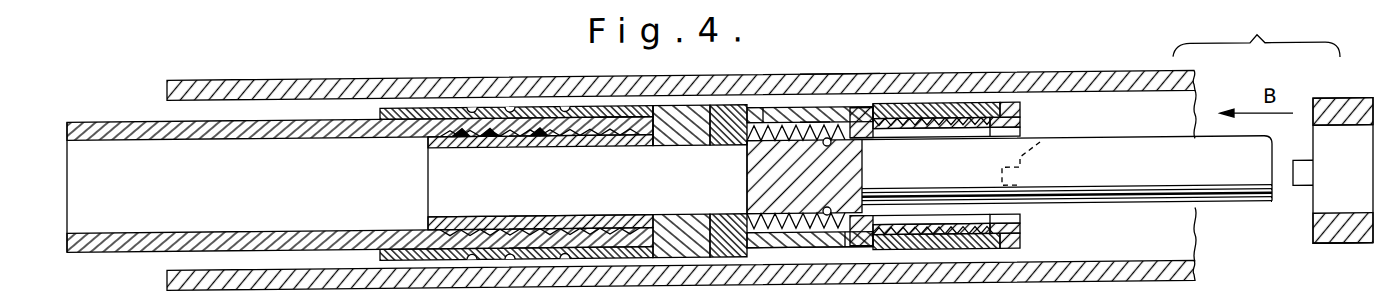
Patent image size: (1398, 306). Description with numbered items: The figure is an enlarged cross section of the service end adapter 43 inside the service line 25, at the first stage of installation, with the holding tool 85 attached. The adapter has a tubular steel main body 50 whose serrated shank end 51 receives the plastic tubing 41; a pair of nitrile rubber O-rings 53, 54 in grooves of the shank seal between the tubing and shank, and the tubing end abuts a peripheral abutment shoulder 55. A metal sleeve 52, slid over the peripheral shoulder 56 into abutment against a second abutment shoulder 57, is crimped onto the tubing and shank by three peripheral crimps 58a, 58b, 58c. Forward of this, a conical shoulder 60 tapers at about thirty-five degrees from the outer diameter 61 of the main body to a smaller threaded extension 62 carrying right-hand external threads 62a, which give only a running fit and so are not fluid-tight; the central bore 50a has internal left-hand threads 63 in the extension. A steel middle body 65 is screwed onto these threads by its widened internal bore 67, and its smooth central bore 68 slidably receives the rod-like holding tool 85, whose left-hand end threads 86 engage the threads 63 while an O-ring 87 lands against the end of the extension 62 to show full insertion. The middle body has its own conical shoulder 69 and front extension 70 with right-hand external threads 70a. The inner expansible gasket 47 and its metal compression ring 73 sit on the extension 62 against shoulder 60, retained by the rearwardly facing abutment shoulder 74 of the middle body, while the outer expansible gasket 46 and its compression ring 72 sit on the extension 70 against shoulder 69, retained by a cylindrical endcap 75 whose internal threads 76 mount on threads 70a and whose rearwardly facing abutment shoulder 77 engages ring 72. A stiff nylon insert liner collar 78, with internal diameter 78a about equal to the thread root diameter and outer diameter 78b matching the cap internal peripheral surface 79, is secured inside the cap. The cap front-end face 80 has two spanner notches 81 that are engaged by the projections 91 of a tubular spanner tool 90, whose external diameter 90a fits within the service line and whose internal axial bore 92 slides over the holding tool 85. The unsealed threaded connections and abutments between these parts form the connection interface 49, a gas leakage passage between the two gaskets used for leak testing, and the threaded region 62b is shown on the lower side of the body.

The service line 25 is at (462, 84).
The tubing 41 is at (248, 142).
The service end adapter 43 is at (840, 85).
The outer expansible gasket 46 is at (920, 109).
The inner expansible gasket 47 is at (763, 107).
The connection interface 49 is at (783, 265).
The main body 50 is at (690, 148).
The central bore 50a is at (500, 223).
The serrated shank end 51 is at (538, 145).
The sleeve 52 is at (437, 114).
The O-ring 53 is at (460, 140).
The O-ring 54 is at (488, 143).
The peripheral abutment shoulder 55 is at (648, 146).
The peripheral shoulder 56 is at (645, 128).
The second abutment shoulder 57 is at (655, 116).
The crimp 58a is at (472, 115).
The crimp 58b is at (510, 115).
The crimp 58c is at (565, 116).
The conical shoulder 60 is at (692, 137).
The outer diameter 61 is at (690, 117).
The threaded extension 62 is at (850, 115).
The external threads 62a is at (873, 118).
The threaded portion 62b is at (790, 248).
The internal left-hand threads 63 is at (740, 158).
The middle body 65 is at (845, 245).
The widened internal bore 67 is at (835, 233).
The central bore 68 is at (880, 244).
The conical shoulder 69 is at (915, 249).
The front extension 70 is at (987, 123).
The external threads 70a is at (960, 119).
The compression ring 72 is at (938, 111).
The compression ring 73 is at (780, 118).
The rearwardly facing abutment shoulder 74 is at (807, 121).
The endcap 75 is at (1010, 120).
The internal threads 76 is at (967, 122).
The rearwardly facing abutment shoulder 77 is at (975, 254).
The insert liner collar 78 is at (1022, 229).
The internal diameter 78a is at (1017, 223).
The outer diameter 78b is at (1020, 243).
The internal peripheral surface 79 is at (1020, 260).
The front-end face 80 is at (1022, 118).
The spanner notch 81 is at (1042, 154).
The holding tool 85 is at (1113, 191).
The external left-hand end threads 86 is at (745, 177).
The O-ring 87 is at (820, 176).
The spanner tool 90 is at (1333, 241).
The external diameter 90a is at (1353, 256).
The spanner projection 91 is at (1300, 200).
The internal axial bore 92 is at (1335, 140).